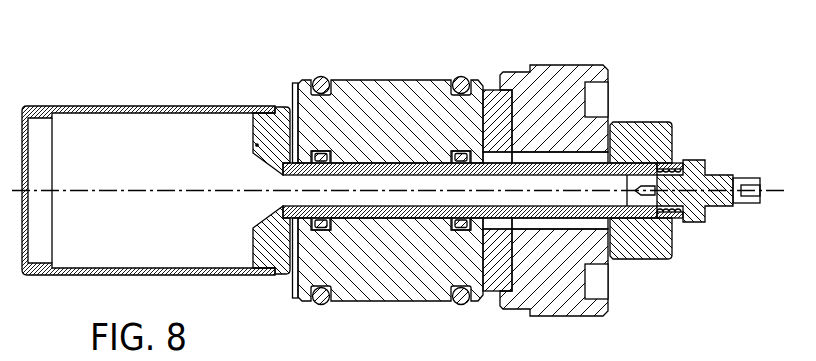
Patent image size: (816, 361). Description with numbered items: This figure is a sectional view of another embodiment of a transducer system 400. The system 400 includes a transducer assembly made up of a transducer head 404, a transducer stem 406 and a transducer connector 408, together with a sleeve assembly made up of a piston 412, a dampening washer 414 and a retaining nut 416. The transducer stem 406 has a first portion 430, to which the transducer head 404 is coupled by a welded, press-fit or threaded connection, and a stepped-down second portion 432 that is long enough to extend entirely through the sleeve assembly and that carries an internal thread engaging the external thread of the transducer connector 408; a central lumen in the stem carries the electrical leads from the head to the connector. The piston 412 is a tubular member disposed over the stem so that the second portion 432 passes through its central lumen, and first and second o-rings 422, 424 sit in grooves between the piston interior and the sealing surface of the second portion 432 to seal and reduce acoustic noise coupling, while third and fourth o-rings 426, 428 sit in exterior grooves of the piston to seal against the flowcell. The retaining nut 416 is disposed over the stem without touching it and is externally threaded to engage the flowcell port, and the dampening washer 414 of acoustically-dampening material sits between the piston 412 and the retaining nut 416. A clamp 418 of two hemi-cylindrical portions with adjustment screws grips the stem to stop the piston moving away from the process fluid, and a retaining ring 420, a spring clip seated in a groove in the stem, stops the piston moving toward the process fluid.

The transducer system 400 is at (114, 48).
The transducer head 404 is at (98, 106).
The transducer stem 406 is at (257, 275).
The transducer connector 408 is at (717, 182).
The piston 412 is at (355, 122).
The dampening washer 414 is at (497, 112).
The retaining nut 416 is at (554, 100).
The clamp 418 is at (643, 140).
The retaining ring 420 is at (292, 158).
The first o-ring 422 is at (332, 227).
The second o-ring 424 is at (471, 228).
The third o-ring 426 is at (318, 303).
The fourth o-ring 428 is at (461, 303).
The first portion 430 is at (257, 145).
The second portion 432 is at (656, 215).